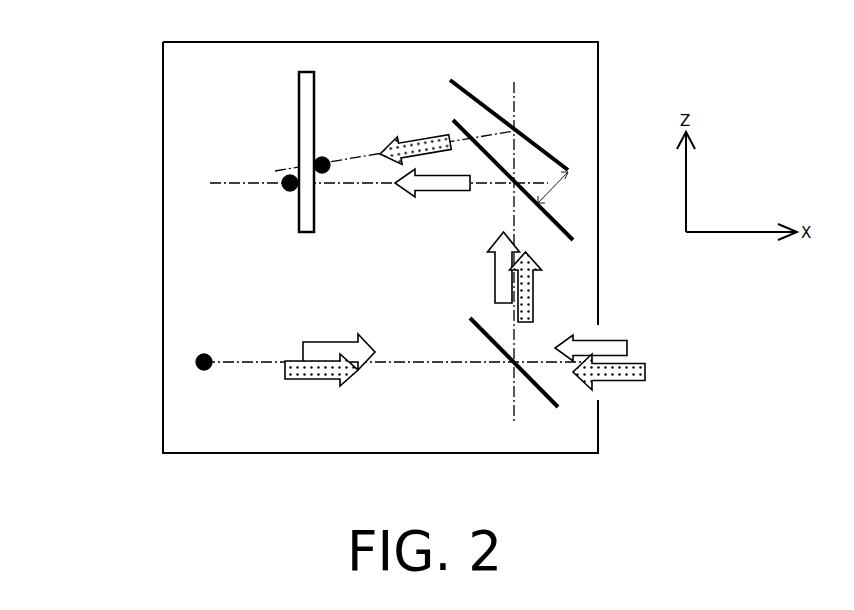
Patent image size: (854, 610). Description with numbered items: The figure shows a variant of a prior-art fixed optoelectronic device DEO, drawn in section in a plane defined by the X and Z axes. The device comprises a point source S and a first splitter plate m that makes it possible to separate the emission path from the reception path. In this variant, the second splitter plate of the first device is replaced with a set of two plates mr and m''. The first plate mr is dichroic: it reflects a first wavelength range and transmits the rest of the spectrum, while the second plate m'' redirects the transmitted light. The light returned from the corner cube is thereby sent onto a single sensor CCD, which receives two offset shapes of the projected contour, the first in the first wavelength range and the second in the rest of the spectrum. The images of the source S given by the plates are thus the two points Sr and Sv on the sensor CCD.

The fixed optoelectronic device DEO is at (124, 288).
The single sensor CCD is at (299, 86).
The second plate of the set m'' is at (513, 125).
The dichroic plate mr is at (512, 184).
The first splitter plate m is at (514, 365).
The image point of the source Sv is at (327, 158).
The image point of the source Sr is at (287, 190).
The point source S is at (209, 372).